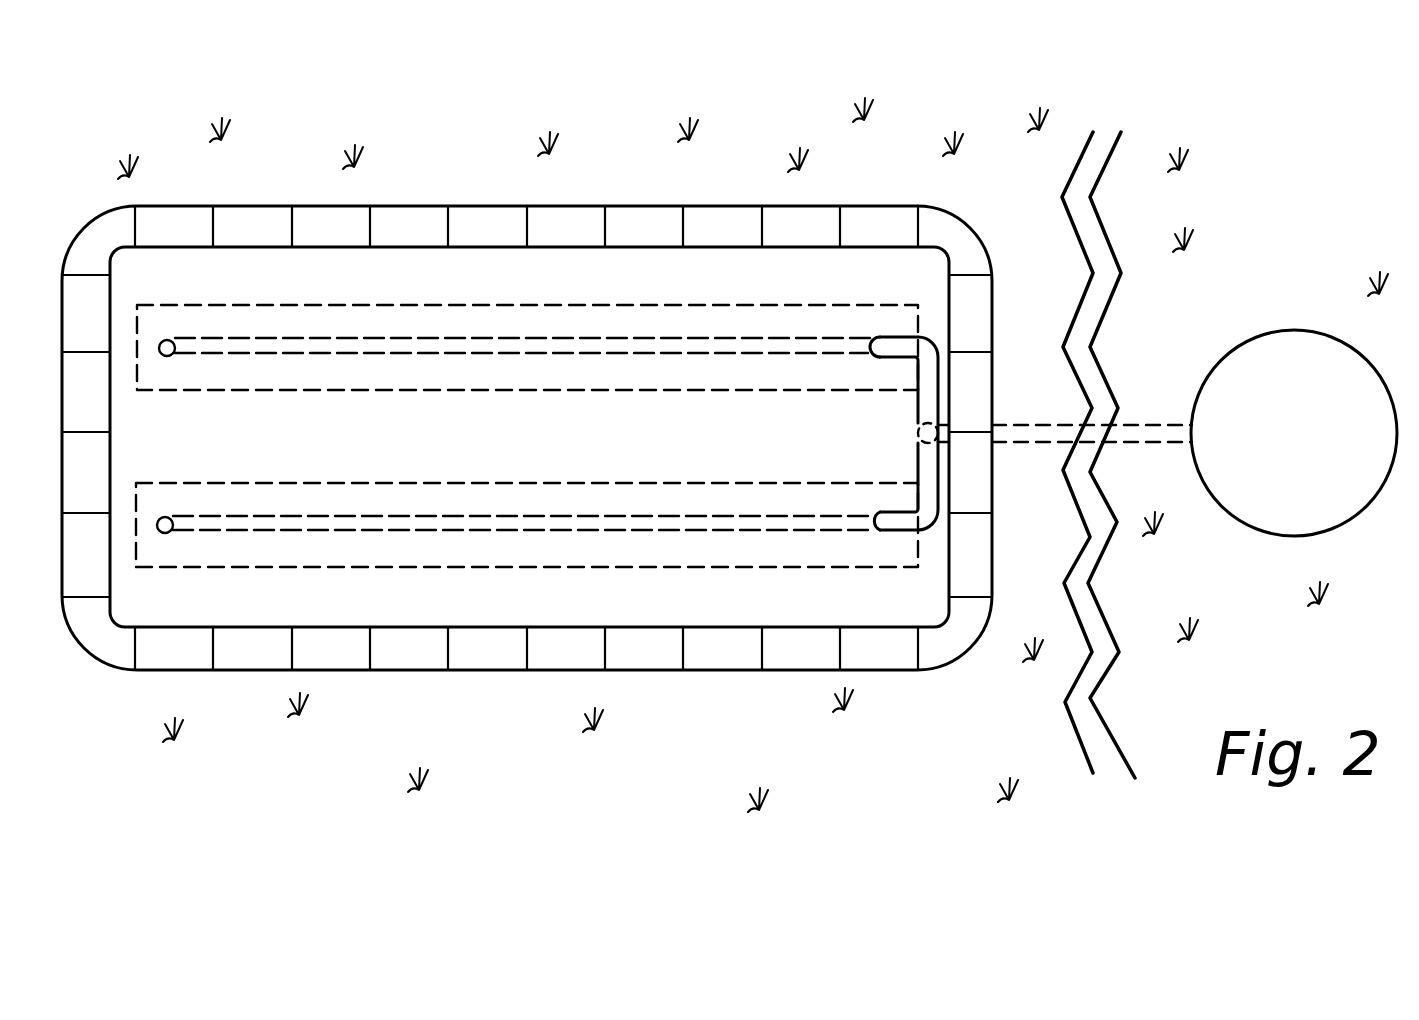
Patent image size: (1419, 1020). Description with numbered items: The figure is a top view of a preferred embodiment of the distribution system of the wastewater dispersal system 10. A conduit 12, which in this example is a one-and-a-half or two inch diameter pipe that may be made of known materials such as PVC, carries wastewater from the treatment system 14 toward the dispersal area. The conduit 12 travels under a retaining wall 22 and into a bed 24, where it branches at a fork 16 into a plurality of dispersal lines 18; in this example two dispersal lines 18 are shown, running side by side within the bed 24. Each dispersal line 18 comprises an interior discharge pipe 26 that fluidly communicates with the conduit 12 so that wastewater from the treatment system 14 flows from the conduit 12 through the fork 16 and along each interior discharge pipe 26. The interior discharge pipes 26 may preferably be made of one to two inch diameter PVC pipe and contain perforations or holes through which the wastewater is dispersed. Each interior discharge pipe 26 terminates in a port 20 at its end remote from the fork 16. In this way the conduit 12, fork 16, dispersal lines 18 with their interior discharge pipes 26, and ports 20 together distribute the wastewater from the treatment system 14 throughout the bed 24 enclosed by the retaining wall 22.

The swimming pool heating system 10 is at (752, 146).
The conduit 12 is at (1130, 420).
The treatment system 14 is at (1284, 330).
The fork 16 is at (938, 393).
The dispersal line 18 is at (632, 306).
The port 20 is at (167, 340).
The retaining wall 22 is at (948, 560).
The bed 24 is at (445, 600).
The interior discharge pipe 26 is at (713, 338).